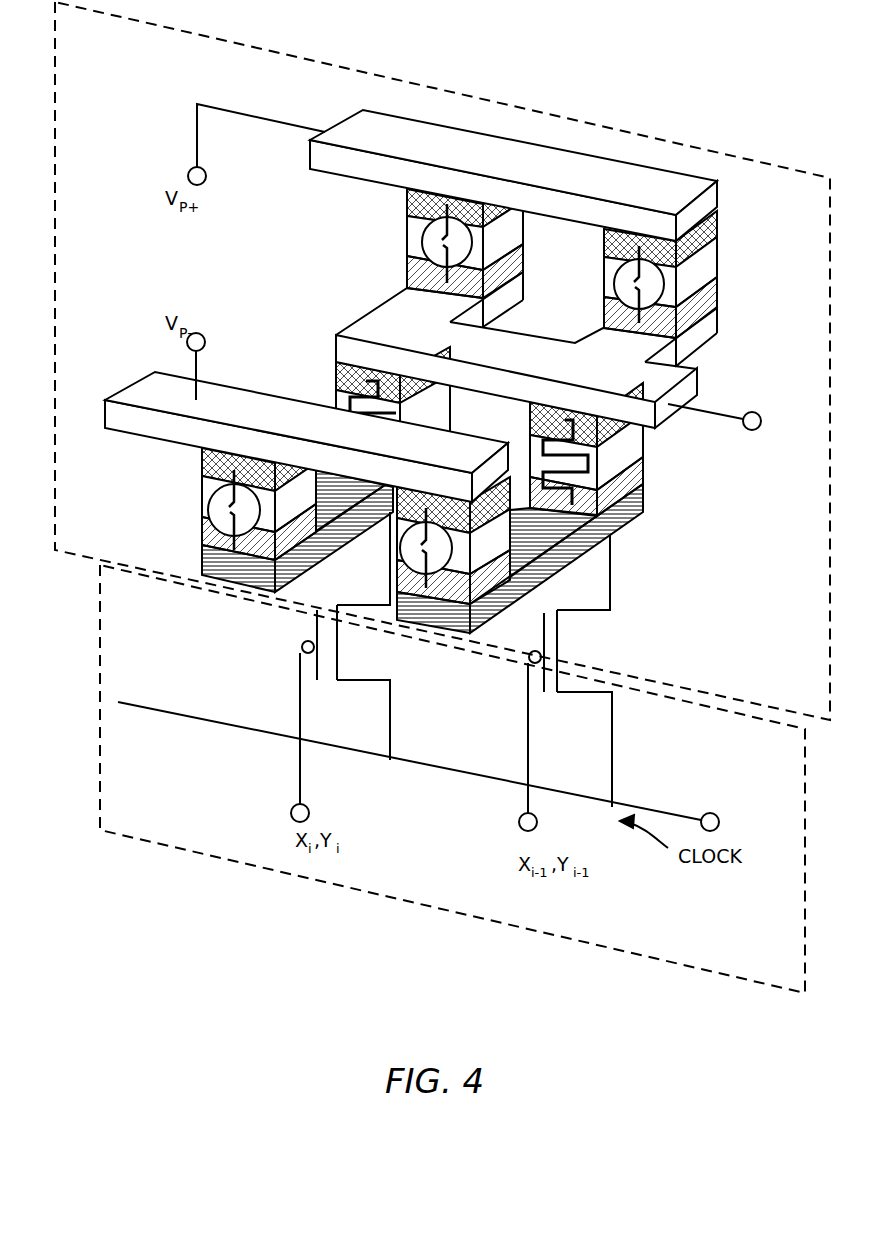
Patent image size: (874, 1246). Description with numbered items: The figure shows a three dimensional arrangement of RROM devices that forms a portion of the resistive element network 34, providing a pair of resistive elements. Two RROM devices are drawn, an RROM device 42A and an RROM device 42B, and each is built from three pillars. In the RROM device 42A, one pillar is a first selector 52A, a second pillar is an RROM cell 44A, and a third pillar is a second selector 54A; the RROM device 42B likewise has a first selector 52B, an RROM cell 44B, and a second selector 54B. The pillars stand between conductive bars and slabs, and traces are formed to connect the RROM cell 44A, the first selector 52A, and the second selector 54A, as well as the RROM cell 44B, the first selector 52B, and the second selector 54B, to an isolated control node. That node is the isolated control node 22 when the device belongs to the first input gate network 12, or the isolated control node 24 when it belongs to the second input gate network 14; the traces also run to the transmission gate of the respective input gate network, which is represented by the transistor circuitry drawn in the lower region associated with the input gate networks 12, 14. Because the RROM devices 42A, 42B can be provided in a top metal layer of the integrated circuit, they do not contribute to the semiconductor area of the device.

The resistive element network 34 is at (114, 52).
The first input gate network 12 is at (452, 779).
The second input gate network 14 is at (160, 615).
The isolated control node 22 is at (574, 351).
The isolated control node 24 is at (752, 412).
The RROM device 42A is at (418, 242).
The RROM device 42B is at (699, 260).
The first selector 52A is at (407, 239).
The first selector 52B is at (716, 231).
The RROM cell 44A is at (336, 392).
The RROM cell 44B is at (643, 452).
The second selector 54A is at (203, 506).
The second selector 54B is at (490, 545).